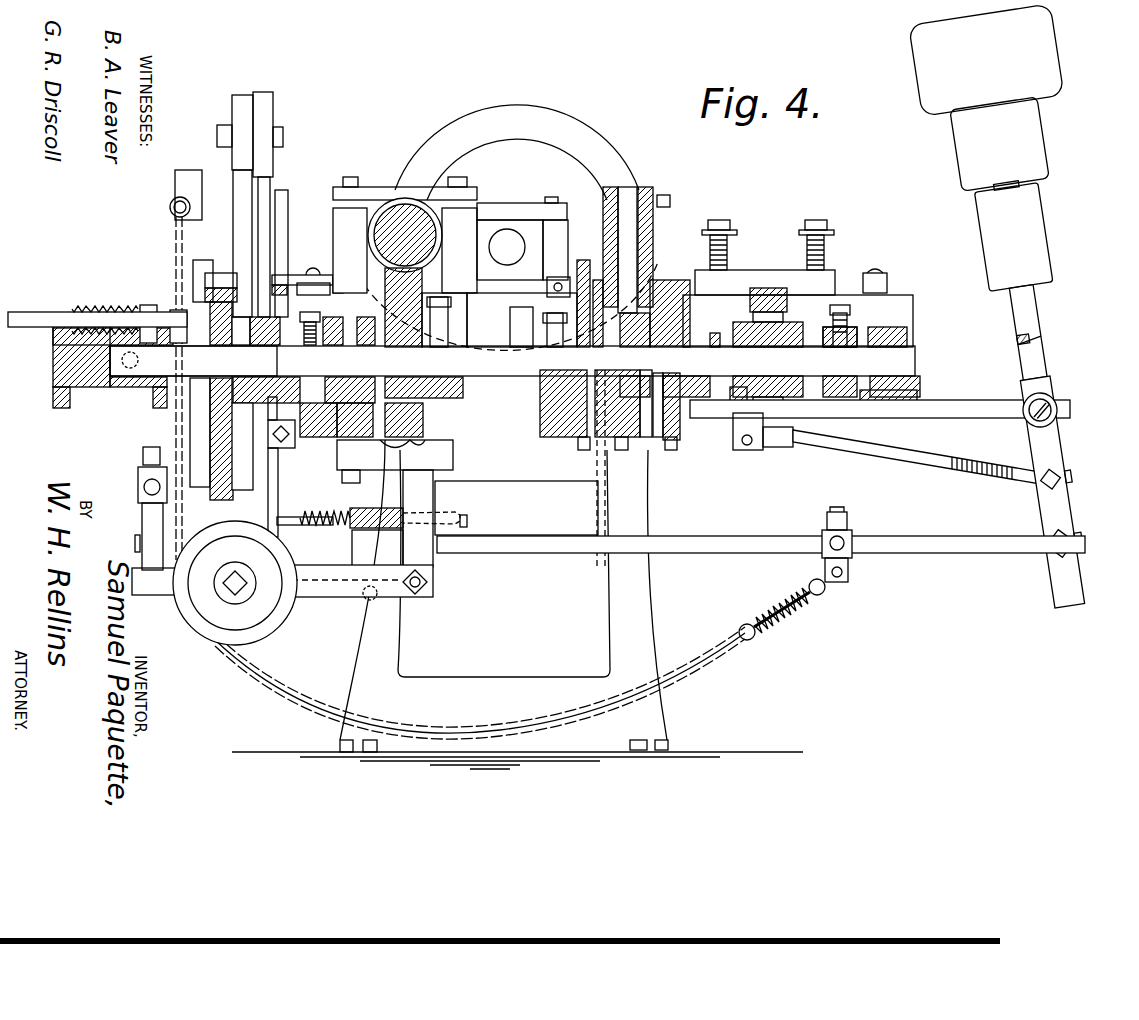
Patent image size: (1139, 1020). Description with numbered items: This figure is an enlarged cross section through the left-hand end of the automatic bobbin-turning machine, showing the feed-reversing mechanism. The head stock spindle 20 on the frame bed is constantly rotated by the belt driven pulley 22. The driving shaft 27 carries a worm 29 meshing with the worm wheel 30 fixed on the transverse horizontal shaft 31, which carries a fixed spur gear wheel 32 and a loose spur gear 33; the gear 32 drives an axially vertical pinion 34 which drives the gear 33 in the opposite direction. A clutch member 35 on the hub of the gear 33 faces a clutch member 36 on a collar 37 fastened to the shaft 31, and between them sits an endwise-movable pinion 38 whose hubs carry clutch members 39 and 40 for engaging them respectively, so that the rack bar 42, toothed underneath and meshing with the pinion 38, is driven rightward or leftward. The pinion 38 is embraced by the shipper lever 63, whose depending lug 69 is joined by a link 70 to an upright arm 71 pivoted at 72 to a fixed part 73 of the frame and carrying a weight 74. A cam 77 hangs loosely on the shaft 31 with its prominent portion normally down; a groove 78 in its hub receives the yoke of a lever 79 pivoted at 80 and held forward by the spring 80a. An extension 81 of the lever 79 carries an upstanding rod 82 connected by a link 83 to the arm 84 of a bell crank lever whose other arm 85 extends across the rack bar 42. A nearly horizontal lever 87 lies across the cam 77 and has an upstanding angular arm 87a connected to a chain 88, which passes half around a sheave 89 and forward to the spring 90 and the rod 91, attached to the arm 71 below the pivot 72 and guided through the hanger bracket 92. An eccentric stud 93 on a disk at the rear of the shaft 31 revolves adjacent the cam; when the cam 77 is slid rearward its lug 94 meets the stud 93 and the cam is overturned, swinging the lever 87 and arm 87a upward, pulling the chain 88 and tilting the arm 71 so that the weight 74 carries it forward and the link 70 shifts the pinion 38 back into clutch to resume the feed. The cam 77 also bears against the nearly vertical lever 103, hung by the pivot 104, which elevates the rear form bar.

The head stock spindle 20 is at (523, 247).
The belt driven pulley 22 is at (517, 152).
The driving shaft 27 is at (333, 222).
The worm 29 is at (400, 200).
The worm wheel 30 is at (385, 300).
The shaft 31 is at (512, 319).
The spur gear wheel 32 is at (578, 410).
The spur gear 33 is at (680, 430).
The axially vertical pinion 34 is at (653, 260).
The clutch member 35 is at (716, 330).
The clutch member 36 is at (835, 310).
The collar 37 is at (835, 390).
The pinion 38 is at (790, 300).
The clutch member 39 is at (730, 395).
The clutch member 40 is at (810, 330).
The rack bar 42 is at (768, 290).
The shipper lever 63 is at (740, 450).
The depending lug 69 is at (755, 450).
The link 70 is at (920, 455).
The upright arm 71 is at (1028, 333).
The pivot 72 is at (1040, 410).
The fixed part of the frame 73 is at (965, 398).
The weight 74 is at (986, 60).
The cam 77 is at (210, 420).
The groove 78 is at (247, 446).
The lever 79 is at (278, 483).
The pivot 80 is at (295, 600).
The spring 80a is at (340, 512).
The extension 81 is at (295, 440).
The upstanding rod 82 is at (282, 205).
The link 83 is at (290, 270).
The arm 84 is at (315, 270).
The arm 85 is at (345, 268).
The lever 87 is at (222, 272).
The upstanding angular arm 87a is at (175, 185).
The chain 88 is at (178, 262).
The sheave 89 is at (214, 546).
The spring 90 is at (790, 612).
The rod 91 is at (920, 545).
The hanger bracket 92 is at (598, 500).
The eccentrically arranged stud 93 is at (172, 318).
The projecting lug 94 is at (195, 330).
The lever 103 is at (245, 222).
The pivot 104 is at (283, 135).